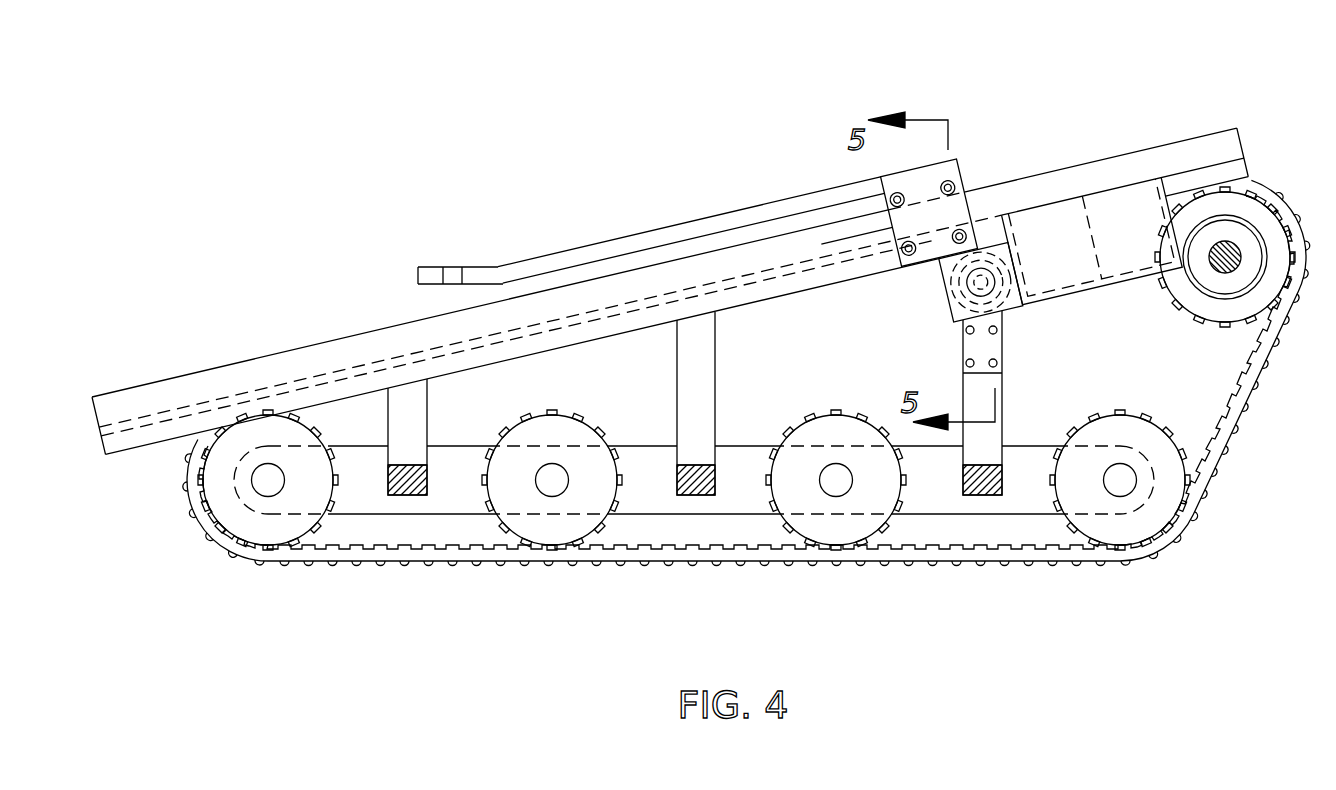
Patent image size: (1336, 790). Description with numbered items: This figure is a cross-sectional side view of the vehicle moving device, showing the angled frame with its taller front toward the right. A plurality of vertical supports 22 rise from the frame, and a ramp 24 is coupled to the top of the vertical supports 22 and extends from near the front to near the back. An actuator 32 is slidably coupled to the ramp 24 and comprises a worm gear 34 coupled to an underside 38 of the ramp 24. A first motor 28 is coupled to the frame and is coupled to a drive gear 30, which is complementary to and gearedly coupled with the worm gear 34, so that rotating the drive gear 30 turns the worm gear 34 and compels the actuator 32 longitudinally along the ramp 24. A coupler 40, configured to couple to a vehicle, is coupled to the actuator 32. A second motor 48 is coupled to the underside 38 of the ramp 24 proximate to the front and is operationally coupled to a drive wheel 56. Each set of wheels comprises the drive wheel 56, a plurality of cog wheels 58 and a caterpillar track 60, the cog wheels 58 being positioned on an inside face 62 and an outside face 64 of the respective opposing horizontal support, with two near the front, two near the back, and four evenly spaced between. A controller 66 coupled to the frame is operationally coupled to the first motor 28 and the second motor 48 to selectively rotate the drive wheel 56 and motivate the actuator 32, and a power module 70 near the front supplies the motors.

The vertical supports 22 is at (968, 387).
The ramp 24 is at (198, 385).
The first motor 28 is at (990, 273).
The drive gear 30 is at (983, 253).
The actuator 32 is at (855, 237).
The worm gear 34 is at (367, 383).
The underside 38 is at (603, 310).
The coupler 40 is at (543, 262).
The second motor 48 is at (1228, 232).
The drive wheel 56 is at (1272, 233).
The cog wheels 58 is at (885, 483).
The caterpillar track 60 is at (392, 555).
The inside face 62 is at (738, 482).
The outside face 64 is at (636, 492).
The controller 66 is at (1090, 227).
The power module 70 is at (1098, 263).